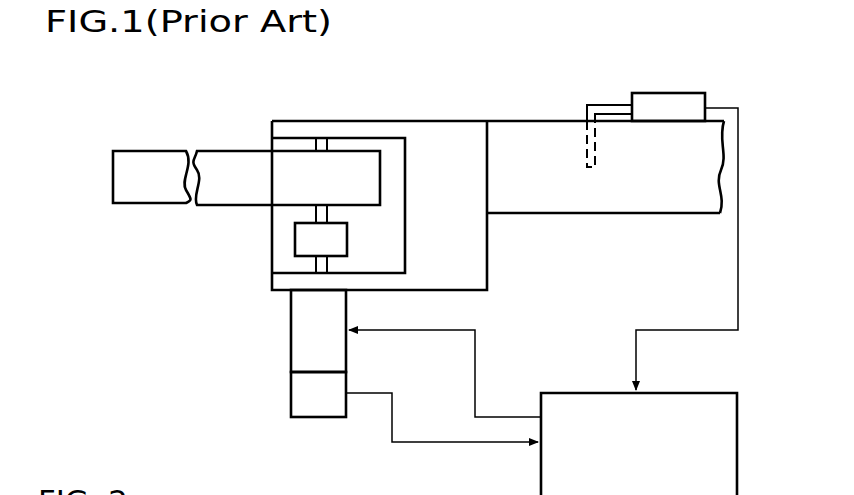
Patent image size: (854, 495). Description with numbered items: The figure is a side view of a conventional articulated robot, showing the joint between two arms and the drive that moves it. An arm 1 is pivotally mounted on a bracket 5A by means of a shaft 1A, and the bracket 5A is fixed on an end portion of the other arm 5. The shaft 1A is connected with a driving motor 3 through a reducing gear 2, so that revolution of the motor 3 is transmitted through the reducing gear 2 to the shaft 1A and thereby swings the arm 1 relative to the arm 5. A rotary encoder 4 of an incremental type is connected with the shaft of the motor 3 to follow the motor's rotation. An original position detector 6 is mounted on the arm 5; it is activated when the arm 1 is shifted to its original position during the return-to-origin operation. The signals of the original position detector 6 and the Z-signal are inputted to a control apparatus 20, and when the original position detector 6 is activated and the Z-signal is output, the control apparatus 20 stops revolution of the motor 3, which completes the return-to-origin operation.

The arm 1 is at (143, 198).
The shaft 1A is at (317, 141).
The reducing gear 2 is at (340, 243).
The driving motor 3 is at (300, 321).
The rotary encoder 4 is at (298, 388).
The arm 5 is at (567, 190).
The bracket 5A is at (472, 282).
The original position detector 6 is at (668, 103).
The control apparatus 20 is at (560, 392).